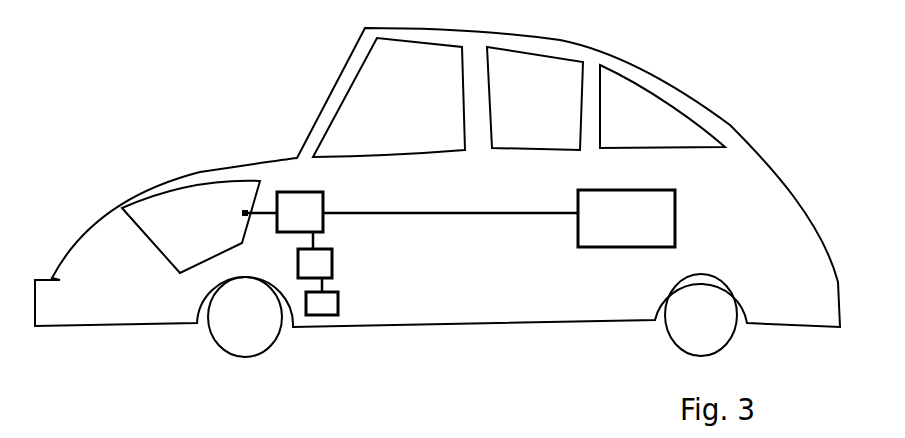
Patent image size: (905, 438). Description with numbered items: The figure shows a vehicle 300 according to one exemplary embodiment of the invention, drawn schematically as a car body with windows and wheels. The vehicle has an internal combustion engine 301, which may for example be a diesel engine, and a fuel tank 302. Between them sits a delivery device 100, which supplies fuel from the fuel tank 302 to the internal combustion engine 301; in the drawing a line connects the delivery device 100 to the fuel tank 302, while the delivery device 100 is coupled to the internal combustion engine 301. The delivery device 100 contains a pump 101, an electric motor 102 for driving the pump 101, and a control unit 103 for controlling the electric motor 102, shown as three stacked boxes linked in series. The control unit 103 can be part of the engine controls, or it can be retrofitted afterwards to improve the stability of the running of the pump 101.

The vehicle 300 is at (830, 120).
The internal combustion engine 301 is at (190, 205).
The fuel tank 302 is at (626, 218).
The delivery device 100 is at (340, 247).
The pump 101 is at (298, 190).
The electric motor 102 is at (333, 262).
The control unit 103 is at (317, 316).